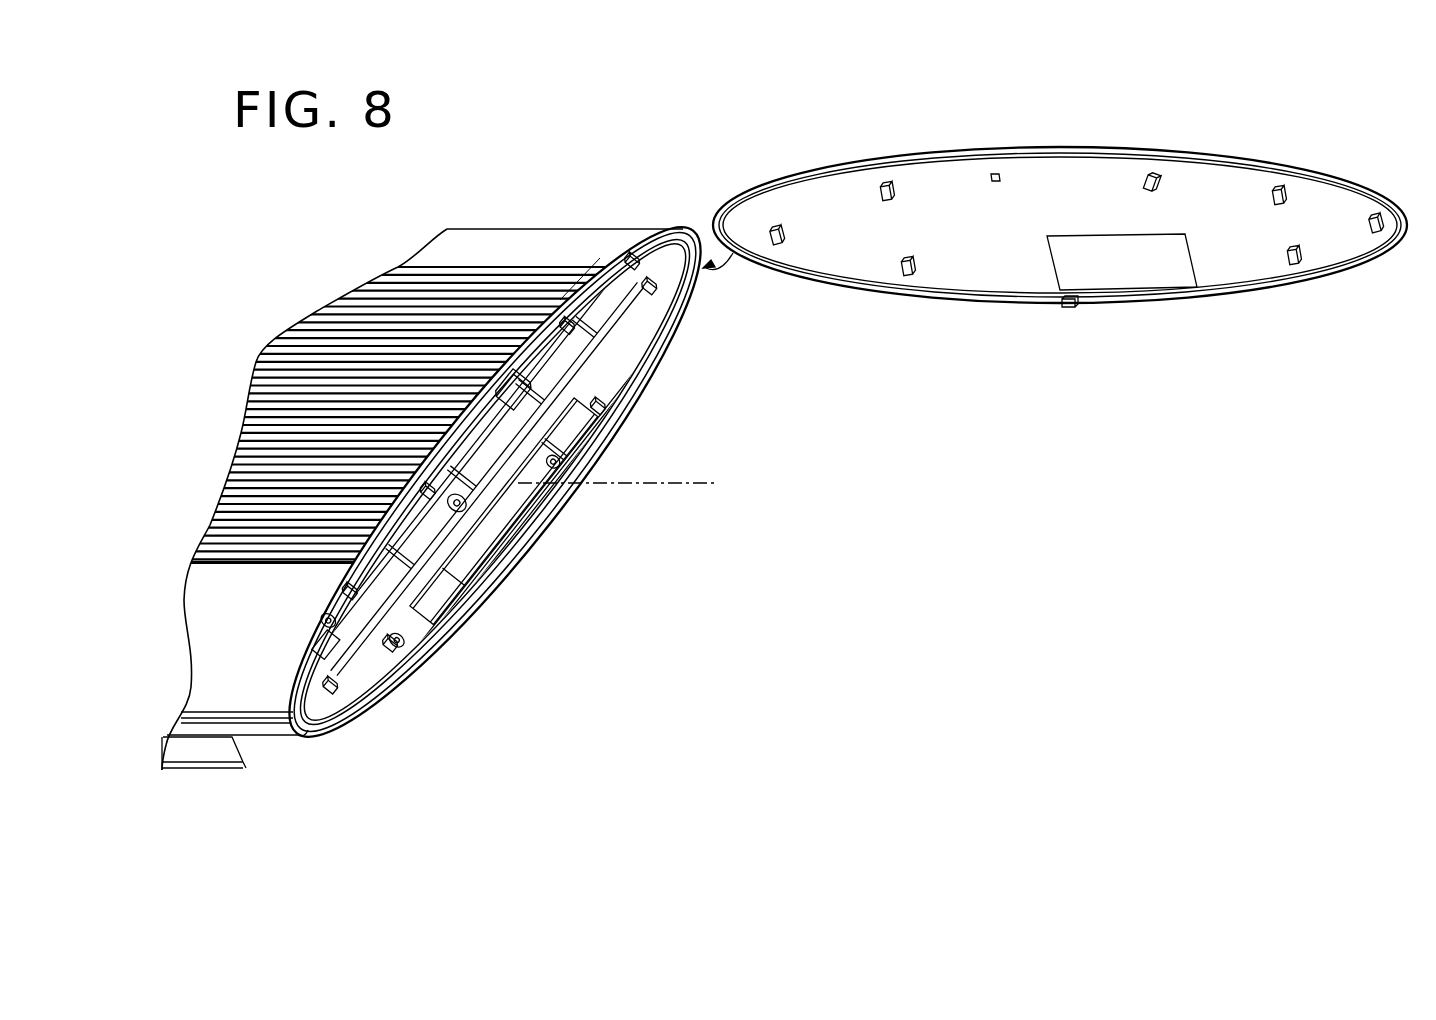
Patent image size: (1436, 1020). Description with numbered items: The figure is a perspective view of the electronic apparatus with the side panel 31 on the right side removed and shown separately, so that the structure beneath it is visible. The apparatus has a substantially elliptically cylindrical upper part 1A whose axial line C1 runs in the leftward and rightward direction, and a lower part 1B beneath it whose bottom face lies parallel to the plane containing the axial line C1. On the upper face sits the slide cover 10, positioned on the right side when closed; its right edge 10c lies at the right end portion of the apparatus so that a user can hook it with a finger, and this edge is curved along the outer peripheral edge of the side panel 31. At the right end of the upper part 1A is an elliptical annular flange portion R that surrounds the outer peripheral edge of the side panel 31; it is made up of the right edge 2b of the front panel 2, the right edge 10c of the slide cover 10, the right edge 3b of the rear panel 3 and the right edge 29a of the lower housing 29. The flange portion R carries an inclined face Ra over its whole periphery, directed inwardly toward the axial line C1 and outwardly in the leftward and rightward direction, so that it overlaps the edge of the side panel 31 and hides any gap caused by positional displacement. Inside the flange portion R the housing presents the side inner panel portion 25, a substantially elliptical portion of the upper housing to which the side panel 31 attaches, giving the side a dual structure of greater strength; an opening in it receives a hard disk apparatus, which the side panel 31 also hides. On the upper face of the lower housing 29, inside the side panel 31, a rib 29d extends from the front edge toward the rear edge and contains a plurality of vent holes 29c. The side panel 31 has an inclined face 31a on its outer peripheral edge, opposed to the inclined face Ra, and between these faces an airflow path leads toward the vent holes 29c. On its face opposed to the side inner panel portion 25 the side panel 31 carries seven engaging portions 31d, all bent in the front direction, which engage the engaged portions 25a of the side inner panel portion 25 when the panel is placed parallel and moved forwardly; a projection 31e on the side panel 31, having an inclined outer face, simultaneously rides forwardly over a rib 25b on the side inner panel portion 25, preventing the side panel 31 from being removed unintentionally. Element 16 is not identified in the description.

The front panel 2 is at (250, 685).
The right edge of the front panel 2b is at (327, 645).
The rear panel 3 is at (527, 243).
The right edge of the rear panel 3b is at (700, 243).
The slide cover 10 is at (482, 272).
The right edge of the slide cover 10c is at (587, 293).
The mounting plate 16 is at (490, 543).
The side inner panel portion 25 is at (567, 377).
The engaged portions 25a is at (655, 289).
The rib 25b is at (513, 390).
The lower housing 29 is at (492, 608).
The right edge of the lower housing 29a is at (510, 578).
The vent holes 29c is at (317, 713).
The rib 29d is at (337, 708).
The side panel 31 is at (1030, 132).
The inclined face 31a is at (1220, 148).
The engaging portions 31d is at (776, 228).
The projection 31e is at (995, 172).
The upper part 1A is at (427, 697).
The lower part 1B is at (228, 792).
The flange portion R is at (676, 350).
The inclined face Ra is at (682, 325).
The axial line C1 is at (631, 482).